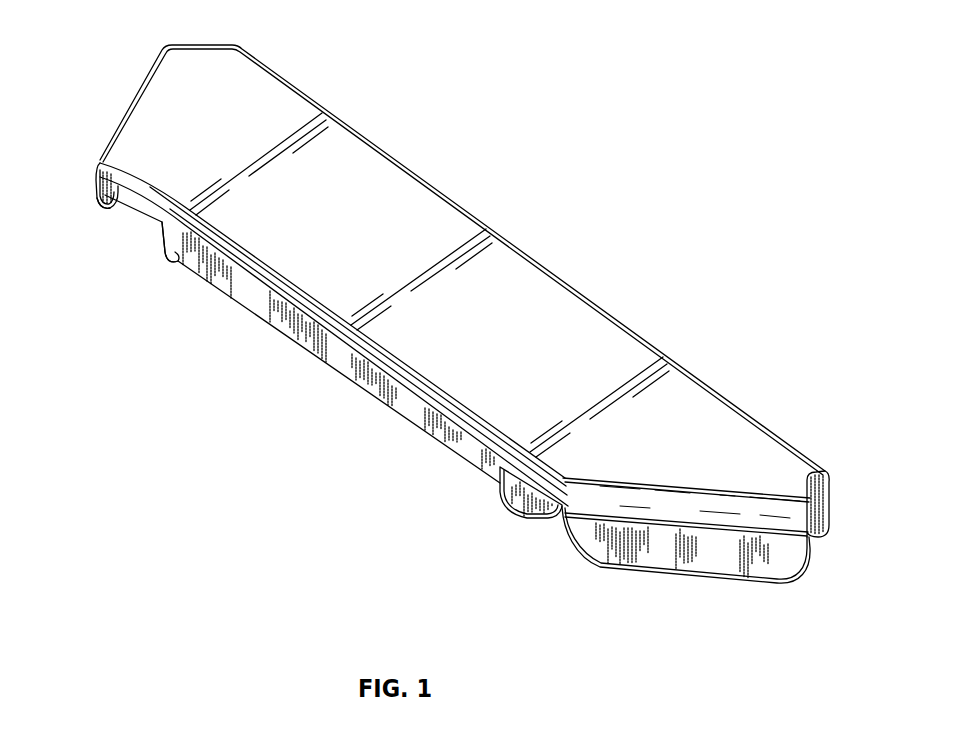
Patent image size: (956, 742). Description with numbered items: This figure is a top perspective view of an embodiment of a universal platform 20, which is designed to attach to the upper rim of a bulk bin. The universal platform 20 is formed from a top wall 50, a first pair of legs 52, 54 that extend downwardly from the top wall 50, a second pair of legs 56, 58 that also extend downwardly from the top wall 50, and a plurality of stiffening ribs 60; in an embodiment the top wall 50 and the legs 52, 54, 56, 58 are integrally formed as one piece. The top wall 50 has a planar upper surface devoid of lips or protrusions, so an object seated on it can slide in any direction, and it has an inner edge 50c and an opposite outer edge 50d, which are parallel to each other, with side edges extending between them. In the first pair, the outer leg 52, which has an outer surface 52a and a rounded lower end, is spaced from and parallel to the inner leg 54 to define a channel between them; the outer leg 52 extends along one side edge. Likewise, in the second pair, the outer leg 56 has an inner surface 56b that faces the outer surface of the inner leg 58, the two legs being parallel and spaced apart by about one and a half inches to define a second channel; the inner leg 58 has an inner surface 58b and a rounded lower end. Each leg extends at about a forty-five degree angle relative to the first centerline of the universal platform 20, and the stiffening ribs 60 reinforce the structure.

The universal platform 20 is at (657, 215).
The top wall 50 is at (543, 327).
The inner edge 50c is at (660, 352).
The outer edge 50d is at (440, 447).
The outer leg 52 is at (97, 203).
The outer surface 52a is at (105, 209).
The inner leg 54 is at (170, 263).
The outer leg 56 is at (727, 564).
The inner surface 56b is at (620, 553).
The inner leg 58 is at (552, 515).
The inner surface 58b is at (513, 497).
The stiffening rib 60 is at (350, 378).